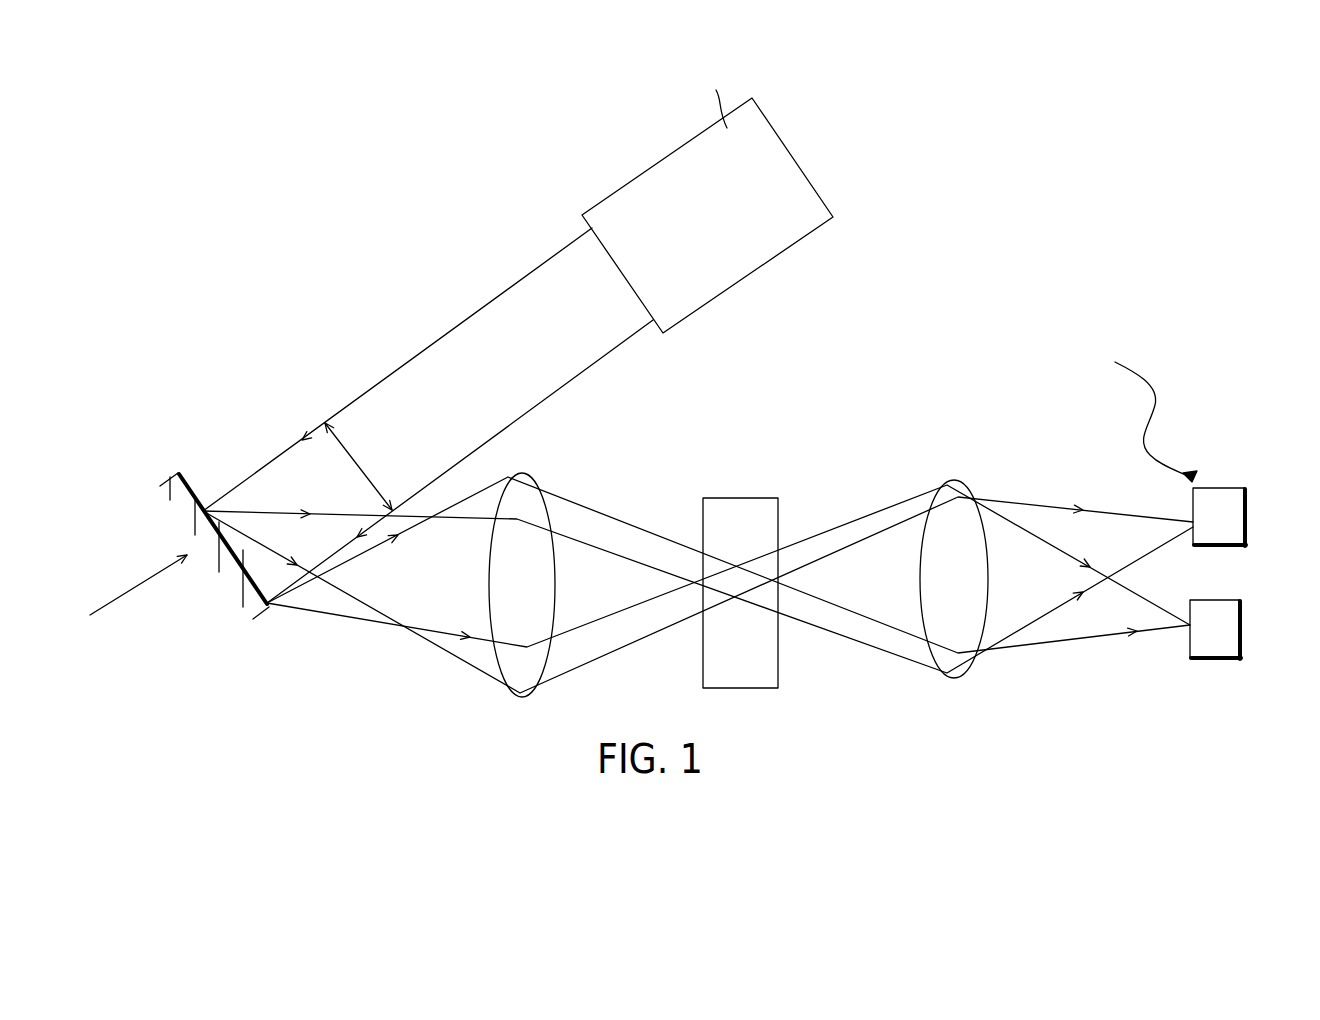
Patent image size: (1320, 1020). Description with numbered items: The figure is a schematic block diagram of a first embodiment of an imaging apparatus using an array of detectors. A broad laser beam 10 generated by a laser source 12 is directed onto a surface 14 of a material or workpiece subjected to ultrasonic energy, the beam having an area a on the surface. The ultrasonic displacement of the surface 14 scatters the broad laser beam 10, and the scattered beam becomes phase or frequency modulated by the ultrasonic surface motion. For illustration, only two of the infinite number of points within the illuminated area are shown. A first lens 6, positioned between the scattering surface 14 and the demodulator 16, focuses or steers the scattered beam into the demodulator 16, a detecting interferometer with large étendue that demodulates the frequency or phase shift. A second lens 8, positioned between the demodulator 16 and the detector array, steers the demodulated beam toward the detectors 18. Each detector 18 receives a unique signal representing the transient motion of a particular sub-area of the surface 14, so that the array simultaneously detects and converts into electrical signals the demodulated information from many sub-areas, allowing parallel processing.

The first lens 6 is at (517, 482).
The second lens 8 is at (960, 480).
The broad laser beam 10 is at (286, 470).
The laser source 12 is at (594, 204).
The surface 14 is at (193, 483).
The demodulator 16 is at (762, 498).
The detector 18 is at (1245, 507).